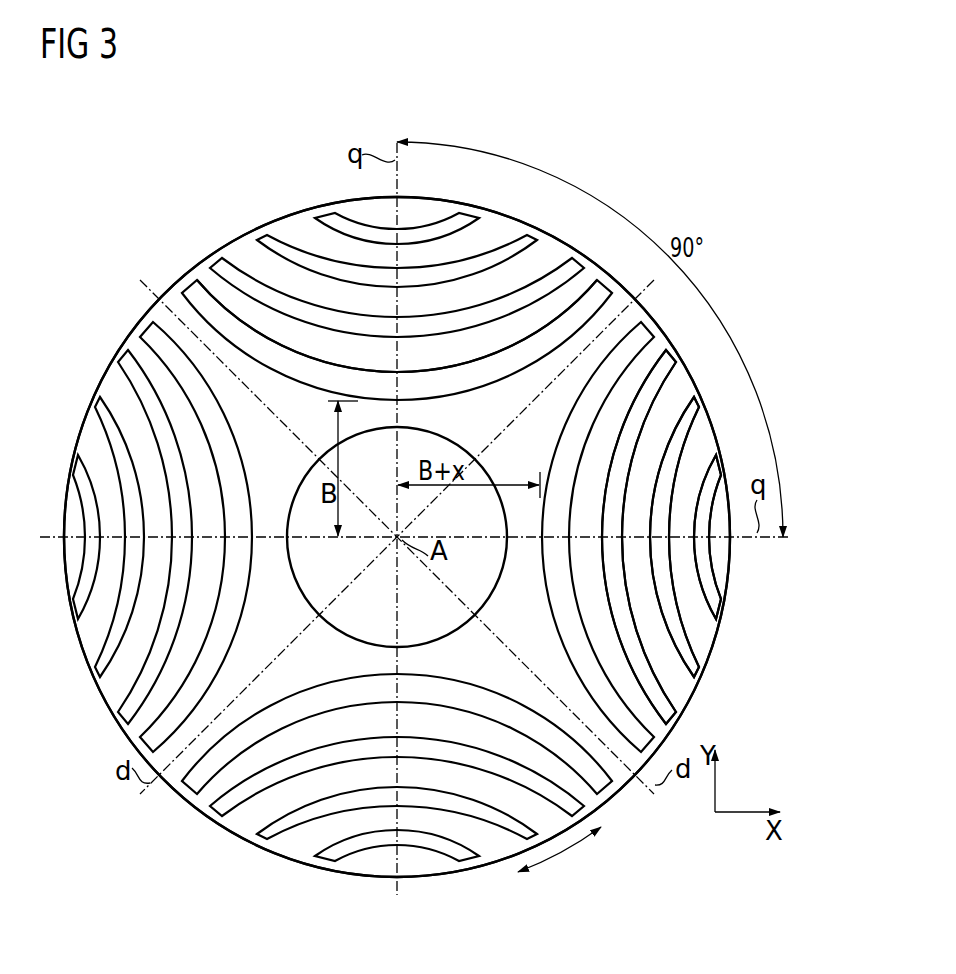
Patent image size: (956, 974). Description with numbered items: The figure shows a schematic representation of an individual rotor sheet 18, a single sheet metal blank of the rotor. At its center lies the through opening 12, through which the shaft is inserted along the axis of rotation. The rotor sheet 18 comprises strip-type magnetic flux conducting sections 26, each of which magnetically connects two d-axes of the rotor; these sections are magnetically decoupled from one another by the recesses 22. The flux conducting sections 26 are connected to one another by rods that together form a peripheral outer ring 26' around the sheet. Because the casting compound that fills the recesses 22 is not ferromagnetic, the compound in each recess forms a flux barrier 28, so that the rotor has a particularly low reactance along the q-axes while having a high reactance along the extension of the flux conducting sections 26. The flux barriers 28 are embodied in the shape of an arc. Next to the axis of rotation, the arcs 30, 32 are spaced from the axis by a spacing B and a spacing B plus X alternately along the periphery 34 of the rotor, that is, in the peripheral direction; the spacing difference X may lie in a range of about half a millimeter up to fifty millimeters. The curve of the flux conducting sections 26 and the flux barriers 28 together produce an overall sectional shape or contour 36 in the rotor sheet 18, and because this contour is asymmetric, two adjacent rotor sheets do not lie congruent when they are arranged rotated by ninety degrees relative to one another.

The through opening 12 is at (356, 621).
The rotor sheet 18 is at (283, 212).
The recesses 22 is at (325, 216).
The flux conducting sections 26 is at (397, 799).
The peripheral outer ring 26' is at (160, 531).
The flux barriers 28 is at (660, 550).
The arc 30 is at (470, 382).
The arc 32 is at (556, 456).
The periphery 34 is at (558, 856).
The contour 36 is at (164, 219).